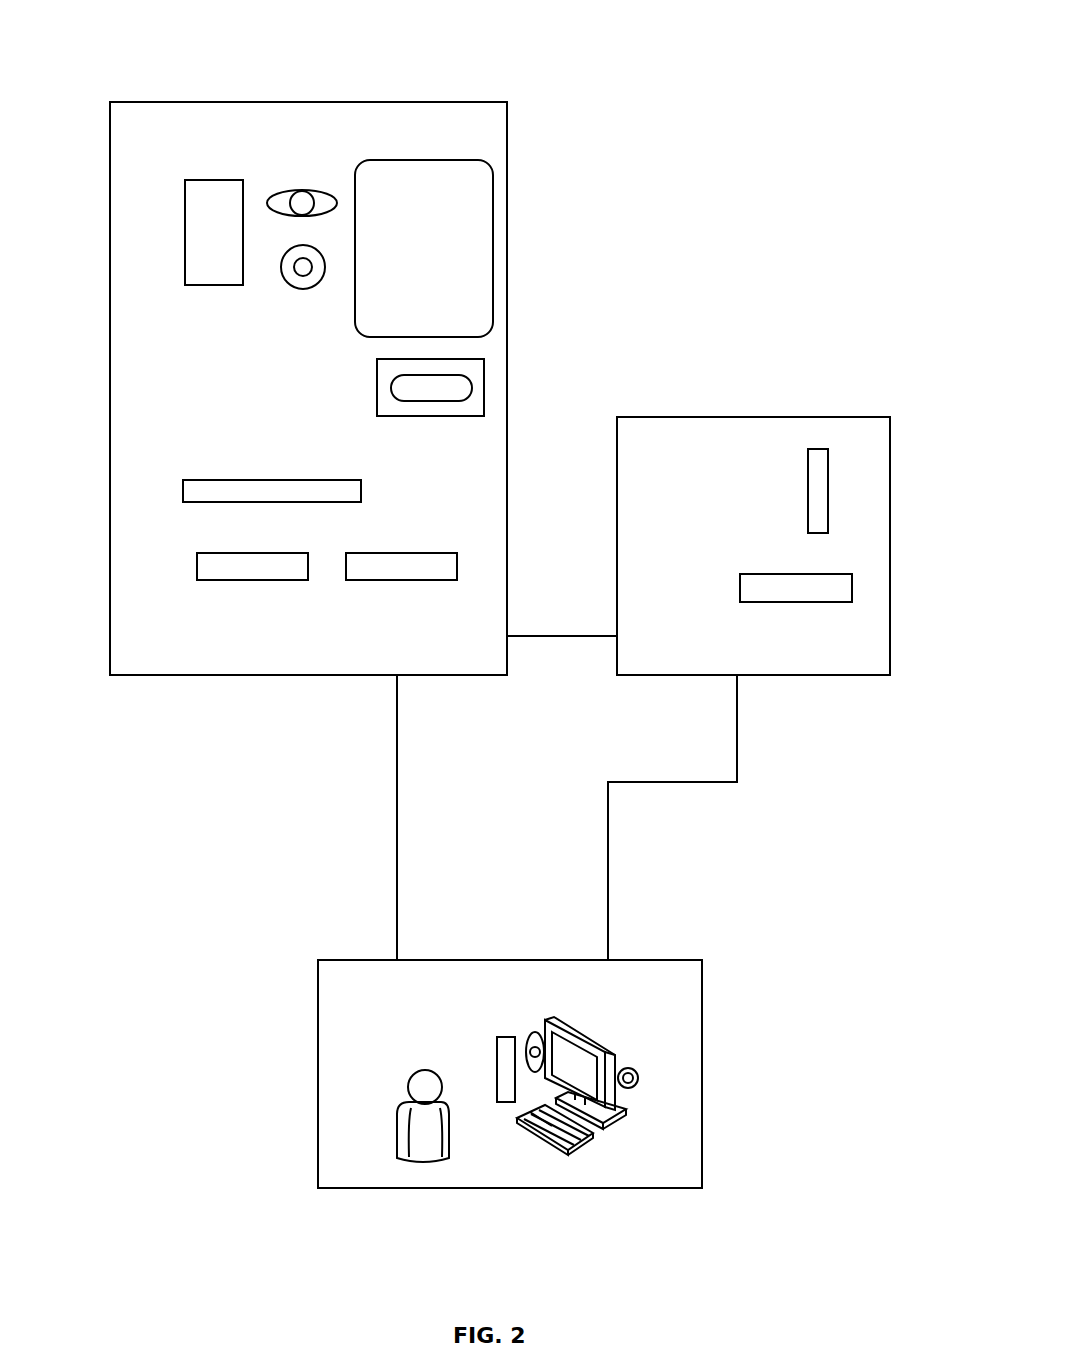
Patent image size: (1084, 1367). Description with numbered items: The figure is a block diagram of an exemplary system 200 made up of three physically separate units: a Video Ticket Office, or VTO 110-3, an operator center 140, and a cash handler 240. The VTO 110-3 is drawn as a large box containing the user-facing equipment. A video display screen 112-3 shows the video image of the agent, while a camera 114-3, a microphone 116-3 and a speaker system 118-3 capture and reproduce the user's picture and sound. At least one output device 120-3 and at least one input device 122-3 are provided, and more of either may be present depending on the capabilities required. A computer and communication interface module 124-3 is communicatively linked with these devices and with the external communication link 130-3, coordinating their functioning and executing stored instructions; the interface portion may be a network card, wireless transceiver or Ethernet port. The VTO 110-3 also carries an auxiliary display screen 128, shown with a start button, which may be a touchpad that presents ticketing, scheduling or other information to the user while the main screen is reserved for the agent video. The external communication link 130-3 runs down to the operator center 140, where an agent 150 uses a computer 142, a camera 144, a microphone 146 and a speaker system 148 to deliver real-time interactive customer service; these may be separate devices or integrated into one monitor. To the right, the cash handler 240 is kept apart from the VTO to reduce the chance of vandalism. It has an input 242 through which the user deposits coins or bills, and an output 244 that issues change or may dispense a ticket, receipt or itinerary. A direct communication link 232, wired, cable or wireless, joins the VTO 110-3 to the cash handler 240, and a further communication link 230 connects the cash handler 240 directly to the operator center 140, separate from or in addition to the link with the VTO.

The system 200 is at (693, 75).
The VTO 110-3 is at (325, 102).
The video display screen 112-3 is at (455, 160).
The camera 114-3 is at (318, 192).
The microphone 116-3 is at (300, 289).
The speaker system 118-3 is at (228, 180).
The output device 120-3 is at (422, 580).
The input device 122-3 is at (277, 580).
The computer and communication interface module 124-3 is at (257, 479).
The auxiliary display screen 128 is at (447, 417).
The external communication link 130-3 is at (350, 817).
The operator center 140 is at (318, 1095).
The computer 142 is at (590, 1032).
The camera 144 is at (533, 1035).
The microphone 146 is at (637, 1085).
The speaker system 148 is at (497, 1047).
The agent 150 is at (410, 1088).
The communication link 230 is at (672, 817).
The direct communication link 232 is at (562, 620).
The cash handler 240 is at (767, 417).
The input 242 is at (805, 464).
The output 244 is at (738, 588).